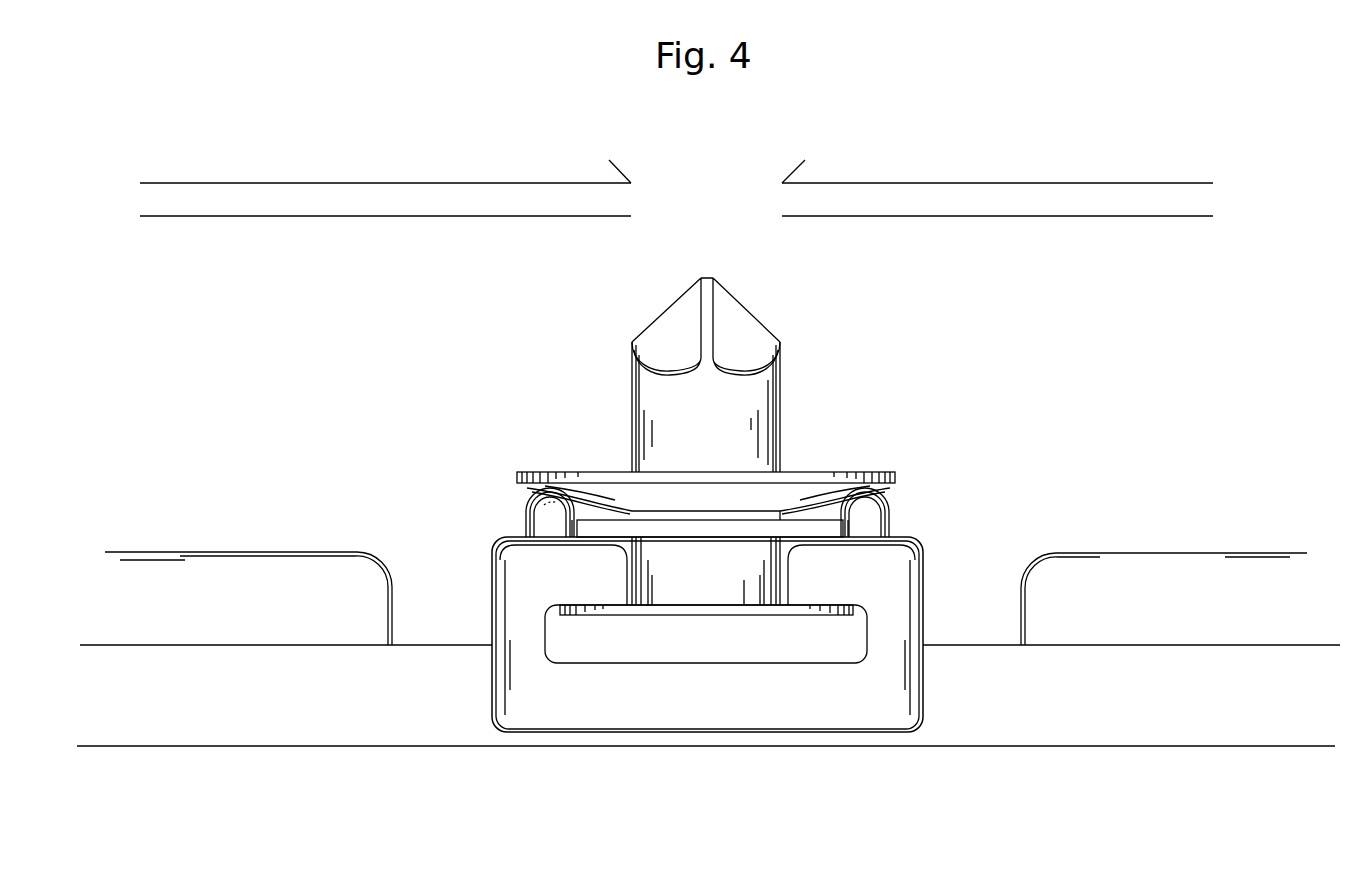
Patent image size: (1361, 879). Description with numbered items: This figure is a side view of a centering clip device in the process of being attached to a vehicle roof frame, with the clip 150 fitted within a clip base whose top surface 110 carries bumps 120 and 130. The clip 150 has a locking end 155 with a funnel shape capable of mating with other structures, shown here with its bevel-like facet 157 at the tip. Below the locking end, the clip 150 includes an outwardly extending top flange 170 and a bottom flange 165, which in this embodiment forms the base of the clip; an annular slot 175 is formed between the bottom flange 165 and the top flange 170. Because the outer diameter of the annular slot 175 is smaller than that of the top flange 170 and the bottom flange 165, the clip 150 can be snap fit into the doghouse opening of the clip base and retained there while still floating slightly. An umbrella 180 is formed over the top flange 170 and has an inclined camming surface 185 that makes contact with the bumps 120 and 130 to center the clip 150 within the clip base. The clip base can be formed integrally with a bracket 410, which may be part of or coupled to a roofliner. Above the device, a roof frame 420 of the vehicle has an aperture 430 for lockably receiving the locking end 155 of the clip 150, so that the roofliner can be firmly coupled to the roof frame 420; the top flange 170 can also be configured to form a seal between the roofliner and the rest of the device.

The top surface 110 is at (518, 540).
The bump 120 is at (888, 512).
The bump 130 is at (530, 522).
The clip 150 is at (668, 368).
The locking end 155 is at (680, 322).
The bevel facet 157 is at (752, 345).
The bottom flange 165 is at (720, 612).
The top flange 170 is at (580, 540).
The annular slot 175 is at (676, 598).
The umbrella 180 is at (860, 470).
The inclined camming surface 185 is at (535, 490).
The bracket 410 is at (1080, 730).
The roof frame 420 is at (985, 205).
The aperture 430 is at (670, 192).